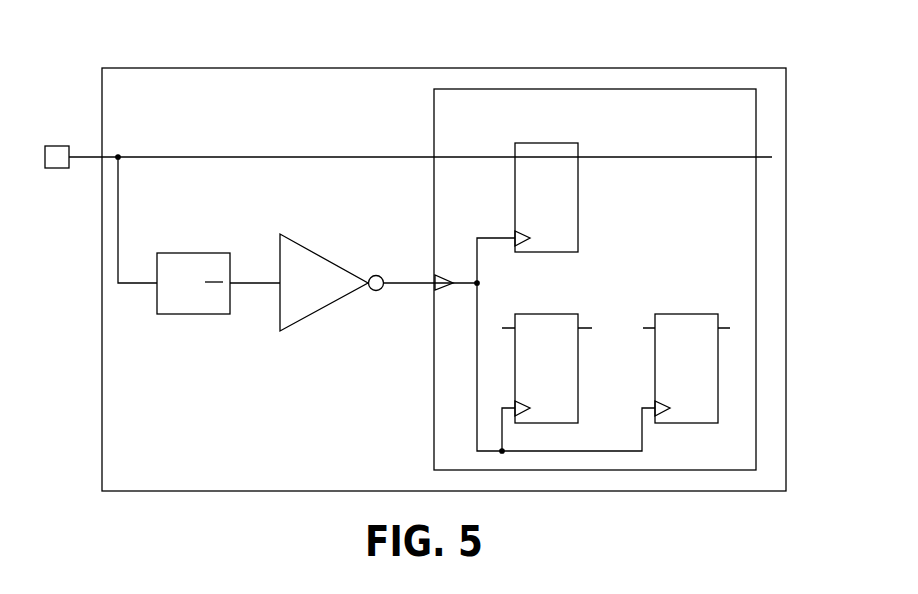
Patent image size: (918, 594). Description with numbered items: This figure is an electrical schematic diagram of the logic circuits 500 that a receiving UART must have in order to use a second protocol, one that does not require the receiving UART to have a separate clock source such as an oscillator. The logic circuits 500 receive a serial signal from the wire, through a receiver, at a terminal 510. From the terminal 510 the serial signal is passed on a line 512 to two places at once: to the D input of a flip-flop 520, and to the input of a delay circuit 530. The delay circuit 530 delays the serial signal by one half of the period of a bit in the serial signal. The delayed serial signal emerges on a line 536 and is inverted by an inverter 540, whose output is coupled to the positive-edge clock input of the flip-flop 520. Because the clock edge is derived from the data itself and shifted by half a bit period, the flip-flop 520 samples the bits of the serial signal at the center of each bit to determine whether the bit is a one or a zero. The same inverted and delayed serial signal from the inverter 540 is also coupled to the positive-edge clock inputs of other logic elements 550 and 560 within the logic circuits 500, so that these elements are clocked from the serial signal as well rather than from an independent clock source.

The logic circuits 500 is at (445, 67).
The terminal 510 is at (56, 144).
The line 512 is at (292, 153).
The flip-flop 520 is at (545, 142).
The delay circuit 530 is at (194, 252).
The line 536 is at (254, 281).
The inverter 540 is at (323, 254).
The logic element 550 is at (545, 313).
The logic element 560 is at (685, 313).